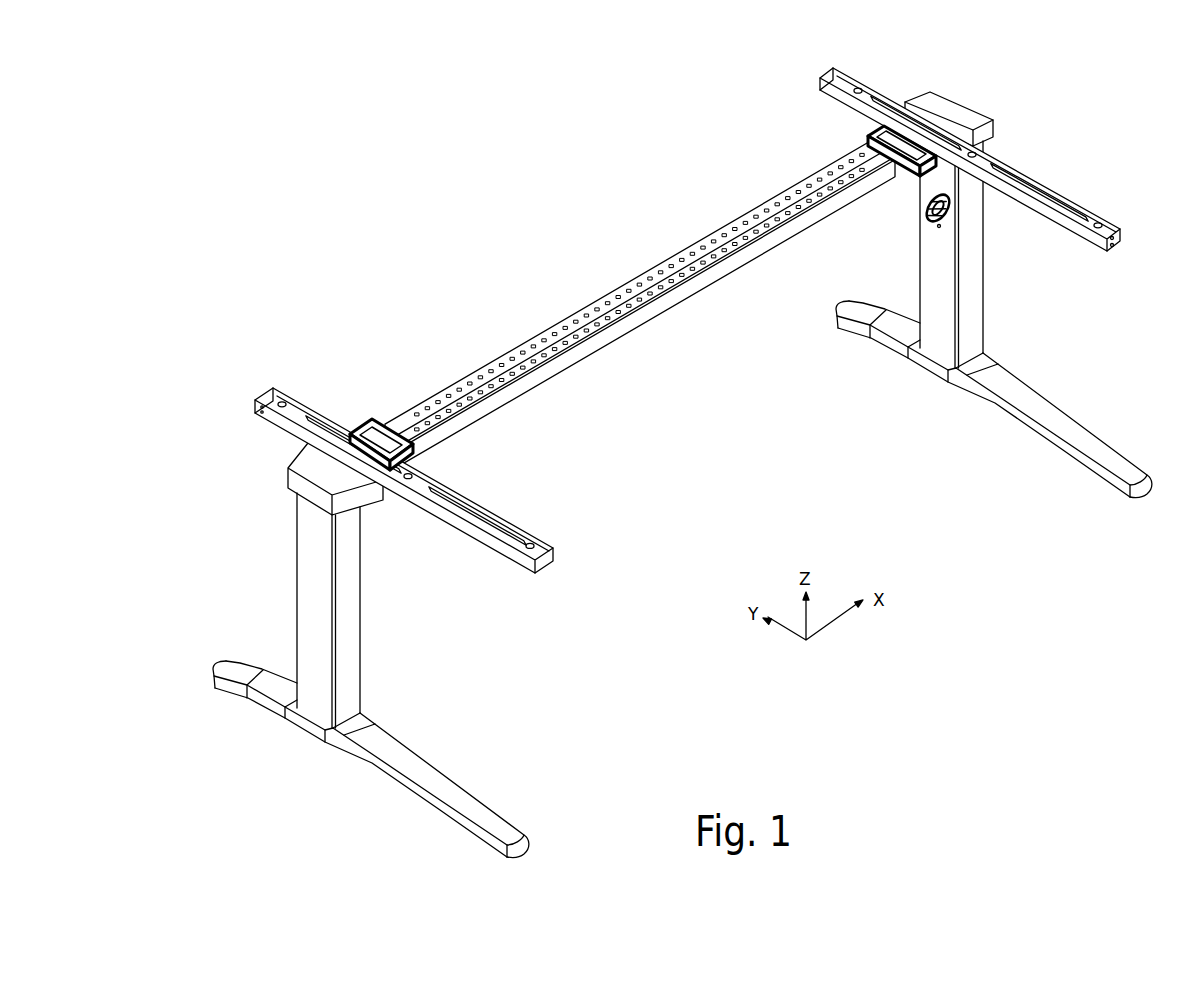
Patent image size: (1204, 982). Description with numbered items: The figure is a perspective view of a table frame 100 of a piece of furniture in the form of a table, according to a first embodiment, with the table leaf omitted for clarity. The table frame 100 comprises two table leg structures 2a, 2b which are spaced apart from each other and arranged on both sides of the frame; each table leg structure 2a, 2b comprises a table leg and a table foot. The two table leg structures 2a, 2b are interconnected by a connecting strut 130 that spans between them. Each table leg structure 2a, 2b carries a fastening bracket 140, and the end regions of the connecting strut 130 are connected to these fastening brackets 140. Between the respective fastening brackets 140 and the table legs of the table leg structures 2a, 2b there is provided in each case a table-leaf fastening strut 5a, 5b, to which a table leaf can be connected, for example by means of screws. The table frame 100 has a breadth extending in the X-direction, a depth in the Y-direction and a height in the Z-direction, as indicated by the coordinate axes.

The table frame 100 is at (347, 168).
The table leg structure 2a is at (350, 613).
The table leg structure 2b is at (975, 289).
The table-leaf fastening strut 5a is at (282, 403).
The table-leaf fastening strut 5b is at (1102, 224).
The connecting strut 130 is at (628, 290).
The fastening bracket 140 is at (375, 406).